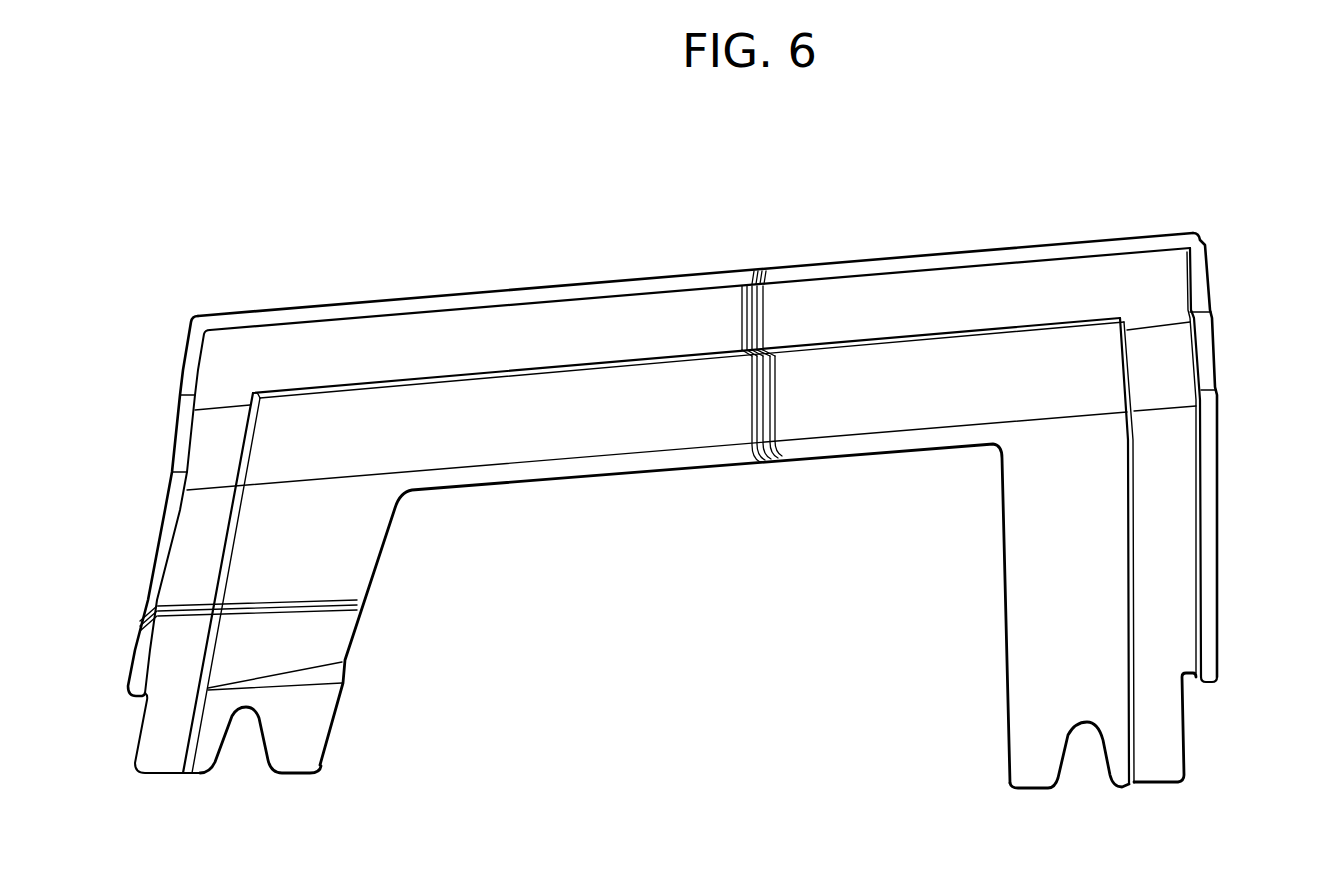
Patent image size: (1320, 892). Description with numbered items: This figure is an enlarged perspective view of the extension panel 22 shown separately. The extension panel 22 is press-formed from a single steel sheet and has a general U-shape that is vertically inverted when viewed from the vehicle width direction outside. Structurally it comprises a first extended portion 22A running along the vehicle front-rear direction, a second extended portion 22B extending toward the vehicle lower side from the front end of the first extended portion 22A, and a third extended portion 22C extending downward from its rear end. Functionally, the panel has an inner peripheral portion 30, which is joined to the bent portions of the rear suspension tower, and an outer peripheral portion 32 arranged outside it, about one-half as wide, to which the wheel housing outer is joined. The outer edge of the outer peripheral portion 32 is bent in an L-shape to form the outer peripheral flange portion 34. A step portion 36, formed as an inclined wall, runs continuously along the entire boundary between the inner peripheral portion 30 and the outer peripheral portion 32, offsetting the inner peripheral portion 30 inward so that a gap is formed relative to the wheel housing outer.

The extension panel 22 is at (924, 218).
The first extended portion 22A is at (650, 322).
The second extended portion 22B is at (330, 570).
The third extended portion 22C is at (1040, 662).
The inner peripheral portion 30 is at (620, 423).
The outer peripheral portion 32 is at (408, 335).
The outer peripheral flange portion 34 is at (1208, 525).
The step portion 36 is at (857, 337).